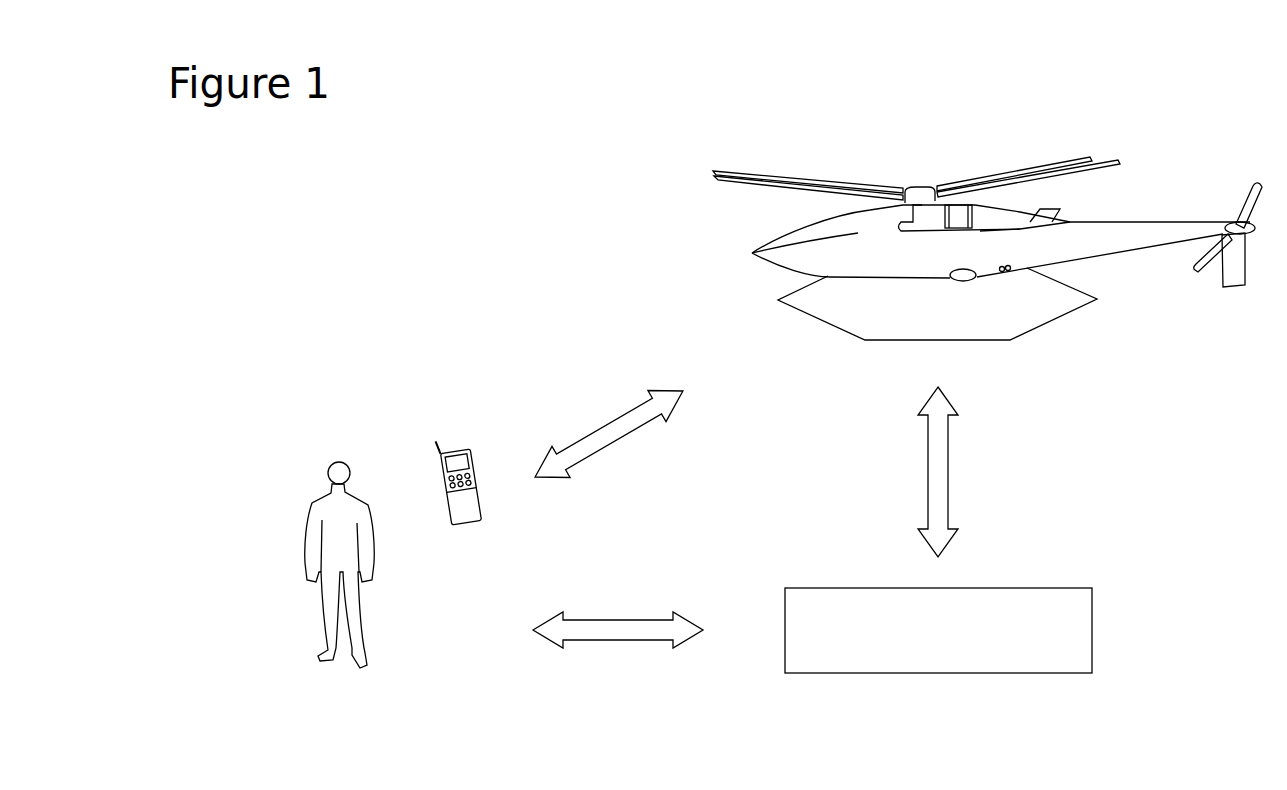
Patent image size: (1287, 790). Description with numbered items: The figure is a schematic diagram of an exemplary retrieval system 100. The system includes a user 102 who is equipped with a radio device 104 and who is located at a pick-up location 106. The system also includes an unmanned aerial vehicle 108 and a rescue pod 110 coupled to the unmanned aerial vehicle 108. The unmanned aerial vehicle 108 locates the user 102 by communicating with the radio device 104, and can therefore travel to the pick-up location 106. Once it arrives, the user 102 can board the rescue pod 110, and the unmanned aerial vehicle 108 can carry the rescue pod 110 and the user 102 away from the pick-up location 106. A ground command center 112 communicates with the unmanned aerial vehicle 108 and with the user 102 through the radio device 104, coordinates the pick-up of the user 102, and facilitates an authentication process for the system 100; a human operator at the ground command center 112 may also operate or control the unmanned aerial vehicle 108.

The retrieval system 100 is at (363, 225).
The user 102 is at (316, 500).
The radio device 104 is at (467, 527).
The pick-up location 106 is at (322, 431).
The unmanned aerial vehicle 108 is at (818, 231).
The rescue pod 110 is at (1007, 322).
The ground command center 112 is at (917, 642).